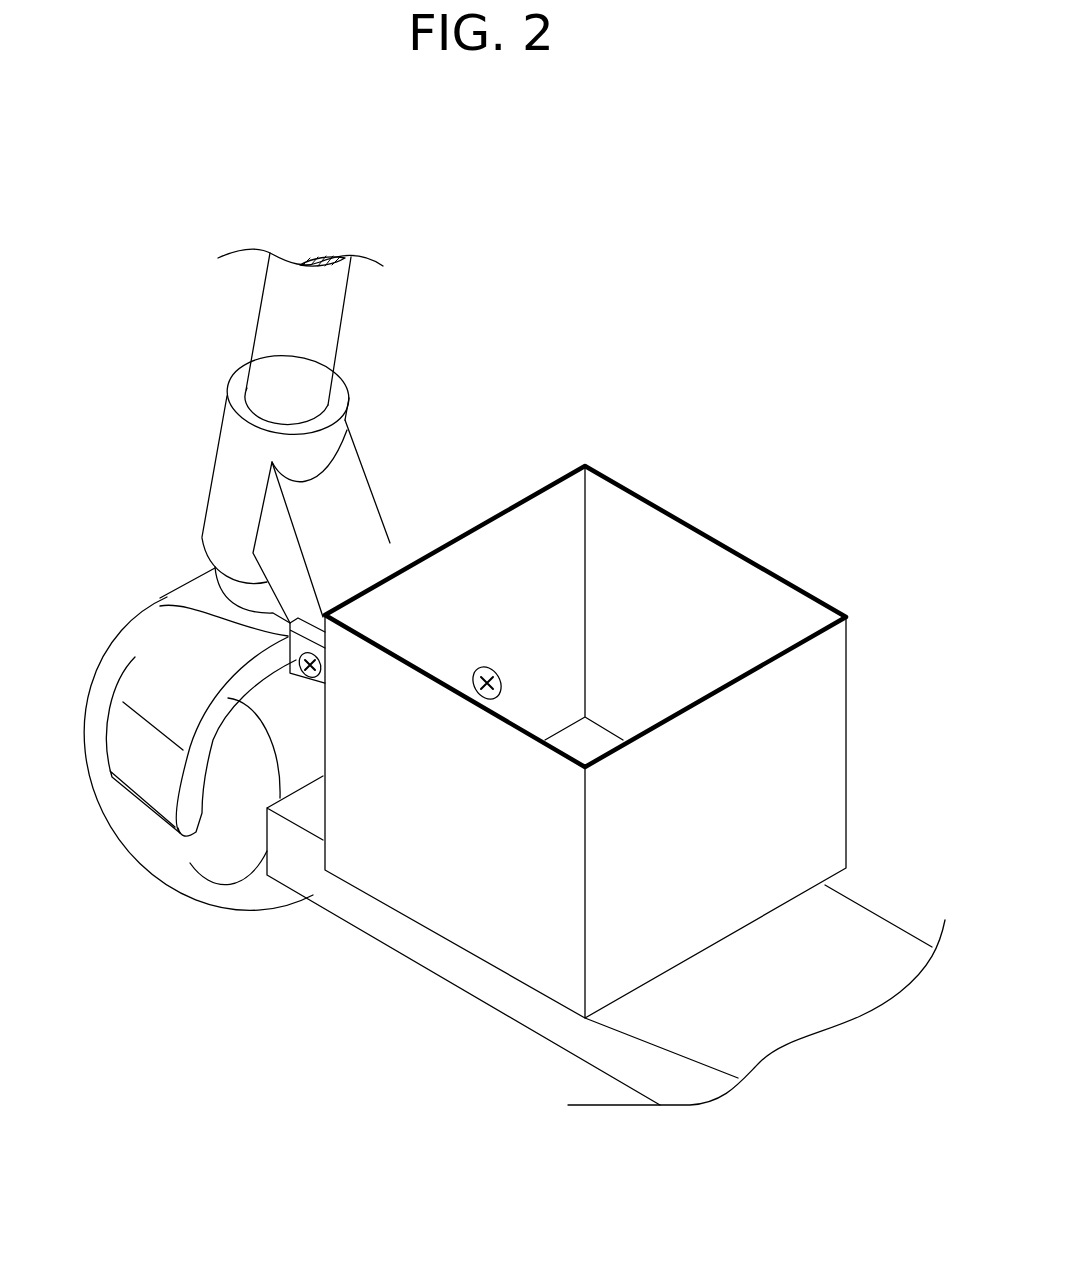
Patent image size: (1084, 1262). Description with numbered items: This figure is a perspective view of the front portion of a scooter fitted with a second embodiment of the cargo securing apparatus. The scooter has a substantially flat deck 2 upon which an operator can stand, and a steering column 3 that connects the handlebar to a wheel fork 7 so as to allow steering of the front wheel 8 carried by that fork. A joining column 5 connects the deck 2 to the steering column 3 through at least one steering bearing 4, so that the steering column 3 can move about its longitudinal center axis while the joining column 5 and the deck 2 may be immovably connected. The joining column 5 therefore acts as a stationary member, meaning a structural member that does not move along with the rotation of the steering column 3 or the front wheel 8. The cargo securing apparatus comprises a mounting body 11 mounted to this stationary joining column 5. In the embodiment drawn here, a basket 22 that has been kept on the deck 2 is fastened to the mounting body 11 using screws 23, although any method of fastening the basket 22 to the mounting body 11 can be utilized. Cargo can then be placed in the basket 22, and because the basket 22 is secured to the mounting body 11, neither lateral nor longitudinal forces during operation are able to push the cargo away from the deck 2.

The deck 2 is at (829, 924).
The steering column 3 is at (334, 338).
The steering bearing 4 is at (221, 444).
The joining column 5 is at (364, 494).
The wheel fork 7 is at (139, 779).
The front wheel 8 is at (214, 864).
The mounting body 11 is at (287, 623).
The basket 22 is at (713, 538).
The screws 23 is at (494, 655).